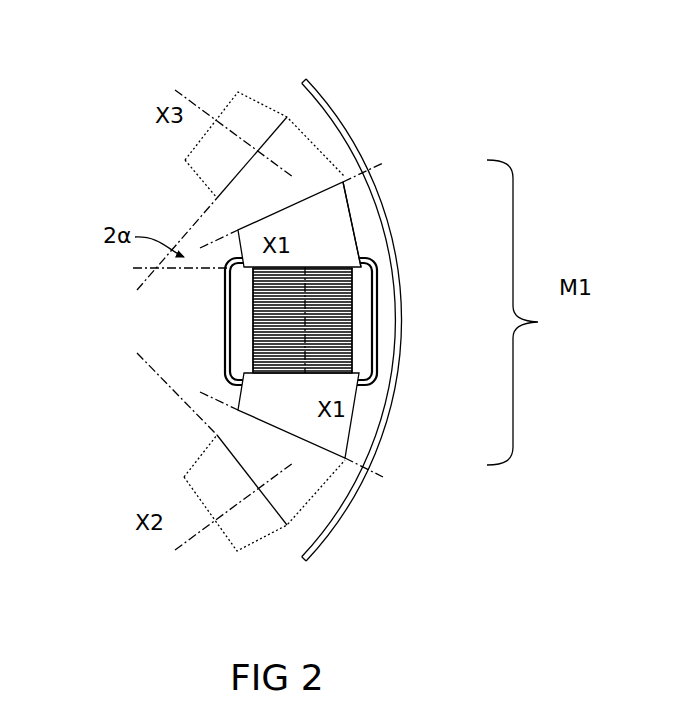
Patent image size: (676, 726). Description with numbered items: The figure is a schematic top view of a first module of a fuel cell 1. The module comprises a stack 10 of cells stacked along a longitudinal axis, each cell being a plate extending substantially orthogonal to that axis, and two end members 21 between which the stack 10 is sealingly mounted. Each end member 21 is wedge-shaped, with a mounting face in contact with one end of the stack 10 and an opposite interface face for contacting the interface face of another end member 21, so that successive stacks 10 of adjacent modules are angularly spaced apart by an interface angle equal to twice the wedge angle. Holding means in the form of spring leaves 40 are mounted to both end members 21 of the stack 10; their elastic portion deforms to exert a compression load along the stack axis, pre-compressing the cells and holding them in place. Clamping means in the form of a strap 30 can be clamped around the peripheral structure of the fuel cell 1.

The fuel cell 1 is at (127, 132).
The stack 10 is at (244, 99).
The end member 21 is at (290, 175).
The strap 30 is at (312, 83).
The spring leaf 40 is at (226, 316).